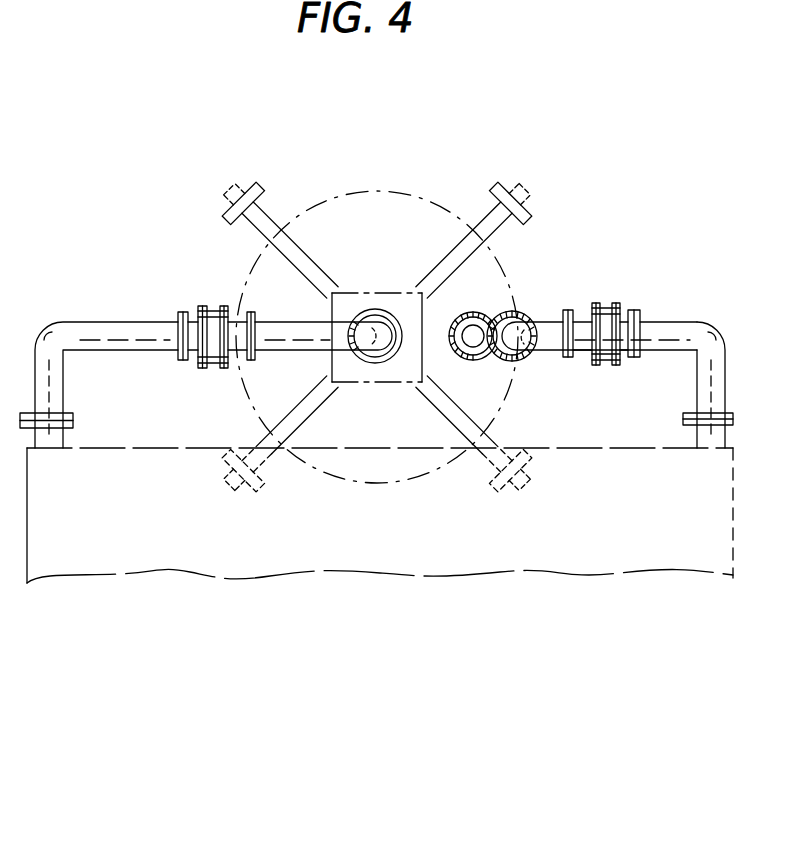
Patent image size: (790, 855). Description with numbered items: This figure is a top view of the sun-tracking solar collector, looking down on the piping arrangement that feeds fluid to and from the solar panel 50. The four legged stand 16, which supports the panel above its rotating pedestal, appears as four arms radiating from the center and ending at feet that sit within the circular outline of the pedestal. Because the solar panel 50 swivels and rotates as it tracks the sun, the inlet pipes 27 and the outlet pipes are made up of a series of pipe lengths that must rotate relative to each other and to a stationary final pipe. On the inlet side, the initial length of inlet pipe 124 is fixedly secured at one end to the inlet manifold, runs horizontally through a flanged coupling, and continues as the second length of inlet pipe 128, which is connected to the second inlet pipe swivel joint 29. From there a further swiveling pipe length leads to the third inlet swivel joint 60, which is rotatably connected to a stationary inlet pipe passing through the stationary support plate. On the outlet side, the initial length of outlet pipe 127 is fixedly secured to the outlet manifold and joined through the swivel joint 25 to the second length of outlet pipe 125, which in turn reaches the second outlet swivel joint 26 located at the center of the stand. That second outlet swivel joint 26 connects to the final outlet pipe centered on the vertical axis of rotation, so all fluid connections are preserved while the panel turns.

The four legged stand 16 is at (279, 211).
The swivel joint 25 is at (199, 290).
The second outlet swivel joint 26 is at (380, 309).
The inlet pipes 27 is at (607, 309).
The second inlet pipe swivel joint 29 is at (521, 302).
The solar panel 50 is at (647, 440).
The third inlet swivel joint 60 is at (454, 310).
The initial length of inlet pipe 124 is at (100, 326).
The second length of outlet pipe 125 is at (257, 399).
The initial length of outlet pipe 127 is at (697, 383).
The second length of inlet pipe 128 is at (556, 350).